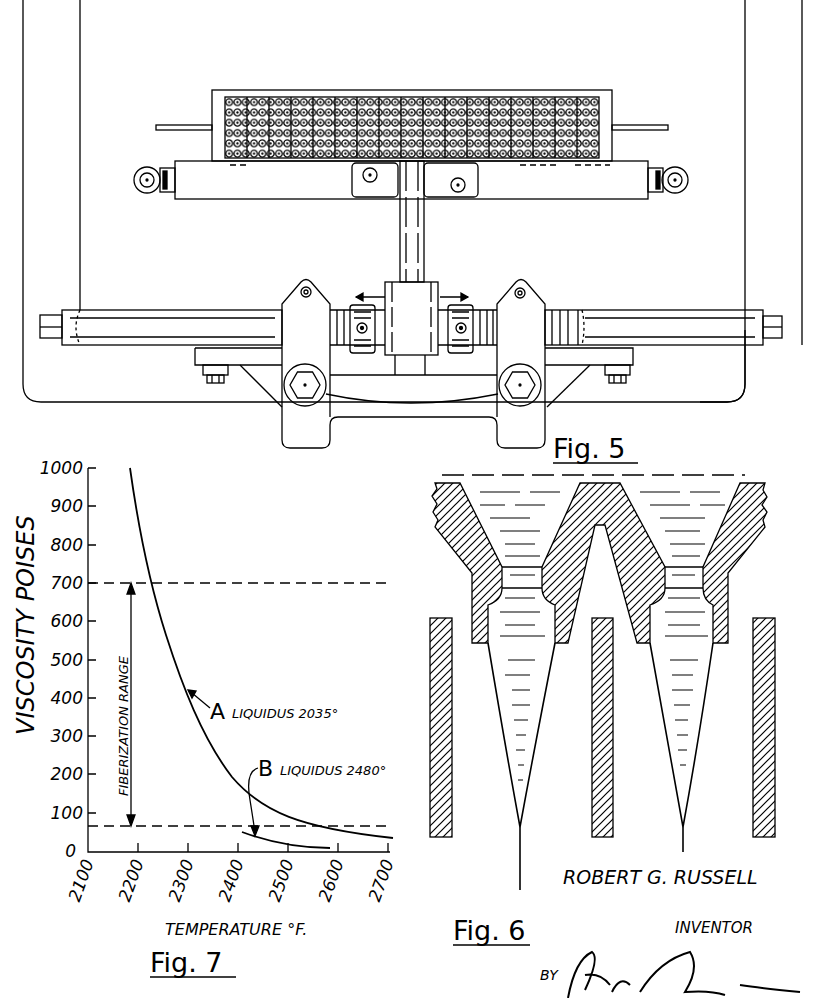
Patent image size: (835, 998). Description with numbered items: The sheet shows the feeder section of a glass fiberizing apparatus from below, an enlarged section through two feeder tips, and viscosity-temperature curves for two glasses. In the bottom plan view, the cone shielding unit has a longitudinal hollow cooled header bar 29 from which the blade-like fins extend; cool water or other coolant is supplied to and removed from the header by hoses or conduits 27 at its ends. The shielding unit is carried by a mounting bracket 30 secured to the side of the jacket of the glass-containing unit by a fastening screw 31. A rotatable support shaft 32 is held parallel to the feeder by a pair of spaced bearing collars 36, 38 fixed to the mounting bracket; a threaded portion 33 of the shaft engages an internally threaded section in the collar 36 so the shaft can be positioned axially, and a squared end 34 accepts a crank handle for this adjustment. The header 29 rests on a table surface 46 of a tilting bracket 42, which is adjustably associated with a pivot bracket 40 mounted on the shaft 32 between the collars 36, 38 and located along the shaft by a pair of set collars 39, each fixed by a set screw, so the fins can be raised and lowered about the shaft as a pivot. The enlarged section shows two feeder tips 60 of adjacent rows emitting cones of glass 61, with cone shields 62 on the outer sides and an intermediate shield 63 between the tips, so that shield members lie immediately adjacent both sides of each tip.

In FIG. 5, the hoses or conduits 27 is at (143, 166).
In FIG. 5, the header bar 29 is at (634, 200).
In FIG. 5, the mounting bracket 30 is at (583, 396).
In FIG. 5, the fastening screw 31 is at (212, 383).
In FIG. 5, the support shaft 32 is at (665, 312).
In FIG. 5, the threaded portion 33 is at (560, 312).
In FIG. 5, the squared end 34 is at (773, 340).
In FIG. 5, the bearing collar 36 is at (547, 266).
In FIG. 5, the bearing collar 38 is at (289, 296).
In FIG. 5, the set collars 39 is at (338, 305).
In FIG. 5, the pivot bracket 40 is at (396, 282).
In FIG. 5, the tilting bracket 42 is at (426, 258).
In FIG. 5, the table surface 46 is at (352, 186).
In FIG. 6, the feeder tips 60 is at (561, 597).
In FIG. 6, the cones of glass 61 is at (536, 722).
In FIG. 6, the cone shields 62 is at (452, 770).
In FIG. 6, the intermediate shield 63 is at (614, 765).